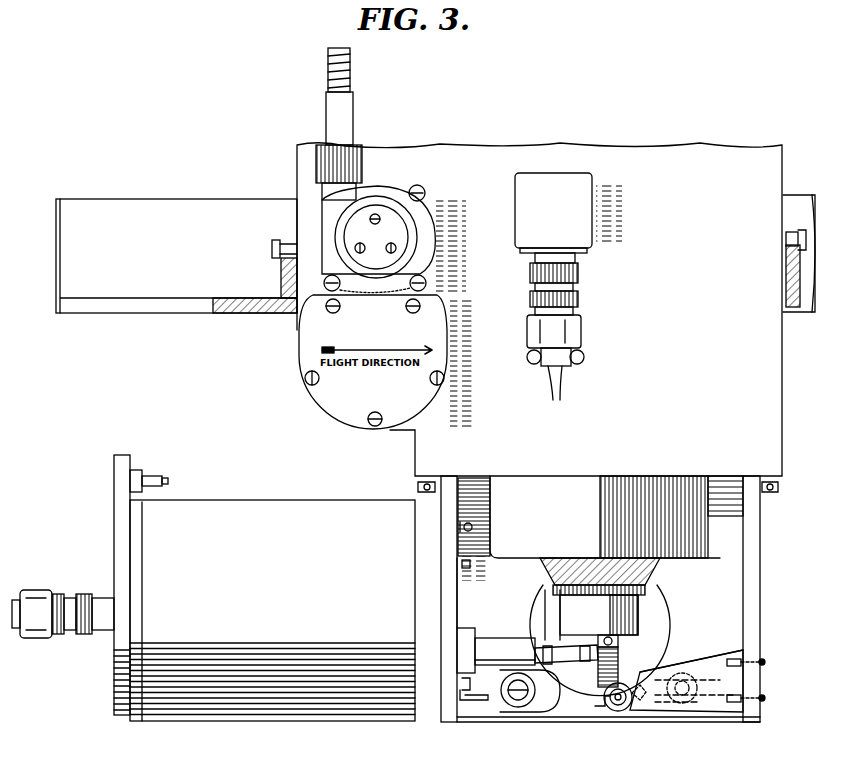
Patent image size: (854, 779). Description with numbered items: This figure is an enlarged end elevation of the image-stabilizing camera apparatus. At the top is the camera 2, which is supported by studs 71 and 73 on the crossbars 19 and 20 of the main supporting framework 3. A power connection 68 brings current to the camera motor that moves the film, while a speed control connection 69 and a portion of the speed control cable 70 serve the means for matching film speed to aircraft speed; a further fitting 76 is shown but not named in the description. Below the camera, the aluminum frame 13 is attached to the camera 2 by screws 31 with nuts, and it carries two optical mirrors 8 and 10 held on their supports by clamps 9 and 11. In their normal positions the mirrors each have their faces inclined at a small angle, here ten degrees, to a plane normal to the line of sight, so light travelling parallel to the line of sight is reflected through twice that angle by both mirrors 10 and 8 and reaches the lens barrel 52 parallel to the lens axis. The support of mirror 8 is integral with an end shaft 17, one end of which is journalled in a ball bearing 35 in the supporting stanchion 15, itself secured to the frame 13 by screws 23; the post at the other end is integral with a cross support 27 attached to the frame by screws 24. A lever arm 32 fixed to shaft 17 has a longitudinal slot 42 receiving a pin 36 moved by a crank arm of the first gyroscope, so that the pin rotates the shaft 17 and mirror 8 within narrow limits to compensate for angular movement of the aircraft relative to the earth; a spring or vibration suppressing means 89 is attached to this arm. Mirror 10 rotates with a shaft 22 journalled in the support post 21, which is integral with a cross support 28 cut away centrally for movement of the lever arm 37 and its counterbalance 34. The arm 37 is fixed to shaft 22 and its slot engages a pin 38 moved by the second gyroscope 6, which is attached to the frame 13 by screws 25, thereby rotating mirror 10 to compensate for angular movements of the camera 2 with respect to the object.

The camera 2 is at (548, 136).
The main supporting framework 3 is at (108, 313).
The gyroscope 6 is at (285, 491).
The optical mirror 8 is at (650, 672).
The clamp 9 is at (597, 708).
The optical mirror 10 is at (566, 664).
The clamp 11 is at (586, 662).
The frame 13 is at (752, 584).
The supporting stanchion 15 is at (714, 660).
The end shaft 17 is at (616, 712).
The crossbar 19 is at (251, 314).
The crossbar 20 is at (800, 314).
The support post 21 is at (498, 638).
The shaft 22 is at (550, 615).
The screws 23 is at (765, 697).
The screws 24 is at (514, 706).
The screws 25 is at (472, 527).
The cross support 27 is at (548, 714).
The cross support 28 is at (465, 642).
The screws 31 is at (420, 494).
The lever arm 32 is at (618, 656).
The counterbalance 34 is at (475, 702).
The ball bearing 35 is at (636, 704).
The pin 36 is at (605, 638).
The lever arm 37 is at (458, 617).
The pin 38 is at (470, 564).
The longitudinal slot 42 is at (620, 640).
The lens barrel 52 is at (646, 605).
The power connection 68 is at (530, 333).
The speed control connection 69 is at (428, 238).
The speed control cable 70 is at (352, 68).
The stud 71 is at (270, 248).
The stud 73 is at (790, 242).
The motor connector 76 is at (42, 640).
The spring or vibration suppressing means 89 is at (154, 470).